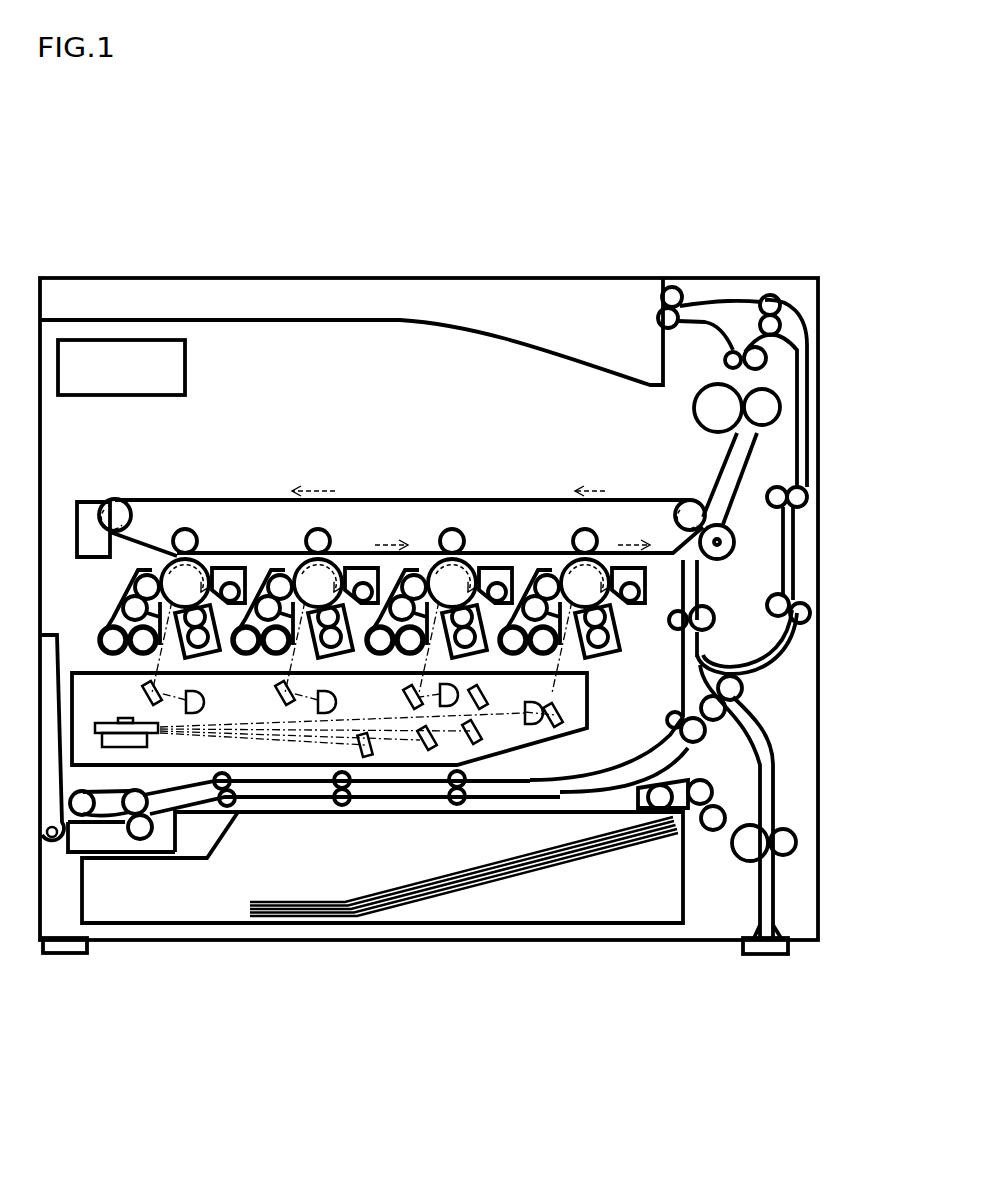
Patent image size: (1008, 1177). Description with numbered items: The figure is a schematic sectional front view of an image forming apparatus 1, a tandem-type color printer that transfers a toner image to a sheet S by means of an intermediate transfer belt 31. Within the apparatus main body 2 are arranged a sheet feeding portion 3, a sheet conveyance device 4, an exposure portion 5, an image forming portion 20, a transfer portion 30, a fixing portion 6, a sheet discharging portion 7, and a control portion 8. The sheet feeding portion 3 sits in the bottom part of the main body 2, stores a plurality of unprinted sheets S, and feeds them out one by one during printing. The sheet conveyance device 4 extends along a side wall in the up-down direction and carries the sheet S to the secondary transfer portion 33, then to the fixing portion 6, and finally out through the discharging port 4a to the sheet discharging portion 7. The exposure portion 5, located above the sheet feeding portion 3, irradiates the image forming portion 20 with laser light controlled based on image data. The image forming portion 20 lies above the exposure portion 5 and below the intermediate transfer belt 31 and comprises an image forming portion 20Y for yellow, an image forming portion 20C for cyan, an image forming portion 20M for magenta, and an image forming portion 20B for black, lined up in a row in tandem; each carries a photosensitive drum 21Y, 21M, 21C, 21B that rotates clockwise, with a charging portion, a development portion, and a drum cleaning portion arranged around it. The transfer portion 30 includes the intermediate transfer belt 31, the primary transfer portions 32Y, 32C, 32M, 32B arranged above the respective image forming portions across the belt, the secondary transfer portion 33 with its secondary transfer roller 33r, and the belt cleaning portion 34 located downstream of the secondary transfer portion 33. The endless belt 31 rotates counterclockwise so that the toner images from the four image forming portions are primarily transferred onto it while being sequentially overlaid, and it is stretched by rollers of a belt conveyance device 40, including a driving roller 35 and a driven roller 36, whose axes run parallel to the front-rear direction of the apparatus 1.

The image forming apparatus 1 is at (236, 183).
The apparatus main body 2 is at (365, 278).
The sheet feeding portion 3 is at (535, 940).
The sheet conveyance device 4 is at (768, 727).
The discharging port 4a is at (656, 296).
The exposure portion 5 is at (160, 775).
The fixing portion 6 is at (782, 384).
The sheet discharging portion 7 is at (522, 338).
The control portion 8 is at (93, 340).
The image forming portion 20 is at (363, 538).
The image forming portion for yellow 20Y is at (155, 601).
The image forming portion for magenta 20M is at (325, 550).
The image forming portion for cyan 20C is at (456, 538).
The image forming portion for black 20B is at (589, 601).
The photosensitive drum 21Y is at (212, 565).
The photosensitive drum 21M is at (347, 565).
The photosensitive drum 21C is at (437, 564).
The photosensitive drum 21B is at (560, 565).
The transfer portion 30 is at (794, 560).
The intermediate transfer belt 31 is at (392, 498).
The primary transfer portion 32Y is at (172, 543).
The primary transfer portion 32M is at (327, 543).
The primary transfer portion 32C is at (467, 543).
The primary transfer portion 32B is at (600, 543).
The secondary transfer portion 33 is at (735, 522).
The secondary transfer roller 33r is at (723, 562).
The belt cleaning portion 34 is at (88, 502).
The driving roller 35 is at (690, 503).
The driven roller 36 is at (115, 503).
The belt conveyance device 40 is at (382, 474).
The sheet S is at (443, 884).